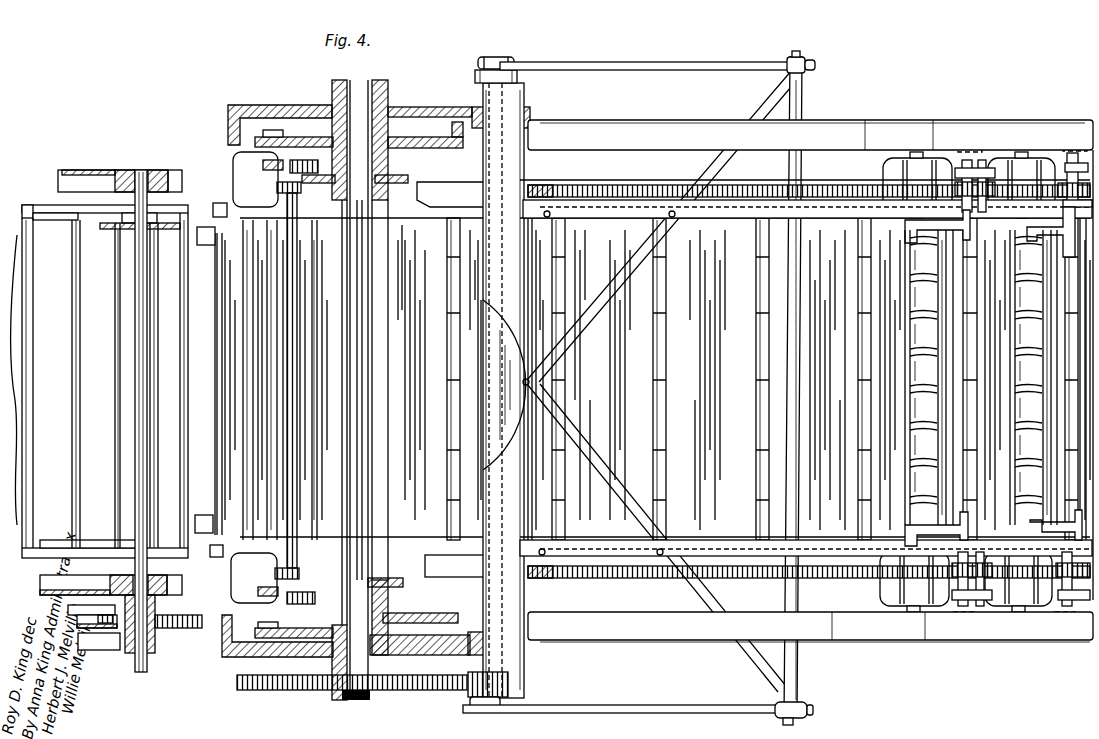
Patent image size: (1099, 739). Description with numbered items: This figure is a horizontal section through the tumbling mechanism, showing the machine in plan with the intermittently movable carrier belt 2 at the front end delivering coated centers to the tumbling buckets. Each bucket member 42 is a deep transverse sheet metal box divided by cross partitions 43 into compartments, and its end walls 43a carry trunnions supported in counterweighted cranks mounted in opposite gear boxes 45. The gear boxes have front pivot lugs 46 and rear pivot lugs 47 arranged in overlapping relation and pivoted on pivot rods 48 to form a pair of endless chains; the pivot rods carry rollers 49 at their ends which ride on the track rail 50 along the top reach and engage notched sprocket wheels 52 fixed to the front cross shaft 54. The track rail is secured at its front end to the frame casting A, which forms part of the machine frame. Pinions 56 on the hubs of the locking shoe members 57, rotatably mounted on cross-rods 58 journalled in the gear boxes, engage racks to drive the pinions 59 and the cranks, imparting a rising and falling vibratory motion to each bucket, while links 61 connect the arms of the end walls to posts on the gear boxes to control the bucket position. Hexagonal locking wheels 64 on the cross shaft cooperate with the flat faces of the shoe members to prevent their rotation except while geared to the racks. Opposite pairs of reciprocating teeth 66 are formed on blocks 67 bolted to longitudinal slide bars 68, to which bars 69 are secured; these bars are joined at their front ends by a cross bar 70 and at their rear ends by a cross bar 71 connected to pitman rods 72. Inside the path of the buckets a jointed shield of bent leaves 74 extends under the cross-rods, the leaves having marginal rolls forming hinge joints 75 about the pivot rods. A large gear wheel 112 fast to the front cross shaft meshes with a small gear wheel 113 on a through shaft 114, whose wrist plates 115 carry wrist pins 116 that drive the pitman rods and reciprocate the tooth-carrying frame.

The carrier belt 2 is at (190, 356).
The bucket member 42 is at (217, 452).
The cross partitions 43 is at (918, 350).
The end walls 43a is at (1027, 232).
The gear boxes 45 is at (236, 175).
The front pivot lugs 46 is at (985, 170).
The rear pivot lugs 47 is at (990, 170).
The pivot rods 48 is at (962, 186).
The rollers 49 is at (272, 130).
The track rail 50 is at (900, 130).
The sprocket wheels 52 is at (402, 148).
The front cross shaft 54 is at (365, 520).
The pinions 56 is at (265, 183).
The locking shoe members 57 is at (302, 187).
The cross-rods 58 is at (299, 262).
The pinions 59 is at (303, 377).
The links 61 is at (905, 225).
The hexagonal locking wheels 64 is at (388, 183).
The reciprocating teeth 66 is at (560, 192).
The blocks 67 is at (538, 186).
The slide bars 68 is at (585, 218).
The bars 69 is at (748, 252).
The front cross bar 70 is at (530, 297).
The rear cross bar 71 is at (788, 337).
The pitman rods 72 is at (746, 58).
The shield leaves 74 is at (470, 230).
The hinge joints 75 is at (450, 330).
The large gear wheel 112 is at (268, 690).
The small gear wheel 113 is at (512, 686).
The through shaft 114 is at (490, 392).
The wrist plates 115 is at (519, 78).
The wrist pins 116 is at (498, 60).
The front frame casting A is at (418, 105).